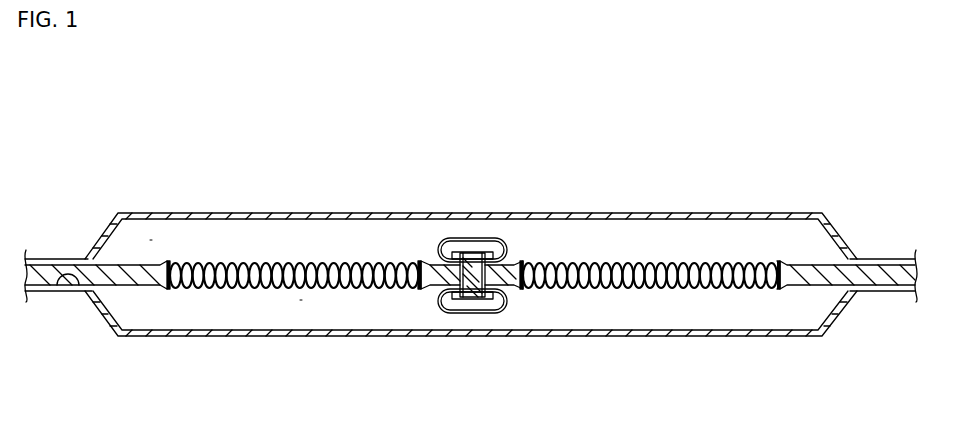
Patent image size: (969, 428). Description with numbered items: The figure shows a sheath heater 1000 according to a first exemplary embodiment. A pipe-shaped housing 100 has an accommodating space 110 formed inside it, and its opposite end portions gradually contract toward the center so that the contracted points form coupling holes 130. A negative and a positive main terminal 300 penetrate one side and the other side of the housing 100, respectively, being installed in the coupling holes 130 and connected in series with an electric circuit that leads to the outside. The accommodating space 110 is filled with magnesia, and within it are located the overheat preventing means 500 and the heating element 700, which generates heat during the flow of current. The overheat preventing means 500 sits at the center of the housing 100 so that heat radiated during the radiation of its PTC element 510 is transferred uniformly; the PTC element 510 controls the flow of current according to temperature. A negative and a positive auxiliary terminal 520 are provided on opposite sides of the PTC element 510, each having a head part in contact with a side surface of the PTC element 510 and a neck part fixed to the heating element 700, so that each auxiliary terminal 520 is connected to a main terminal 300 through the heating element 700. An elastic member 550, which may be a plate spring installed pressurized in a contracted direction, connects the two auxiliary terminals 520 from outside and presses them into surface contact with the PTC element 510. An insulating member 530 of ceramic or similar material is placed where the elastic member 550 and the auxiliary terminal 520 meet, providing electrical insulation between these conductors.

The sheath heater 1000 is at (658, 158).
The housing 100 is at (343, 213).
The accommodating space 110 is at (218, 242).
The coupling hole 130 is at (80, 292).
The main terminal 300 is at (107, 270).
The overheat preventing means 500 is at (506, 230).
The PTC element 510 is at (473, 288).
The auxiliary terminal 520 is at (517, 290).
The insulating member 530 is at (440, 300).
The elastic member 550 is at (475, 238).
The heating element 700 is at (257, 290).